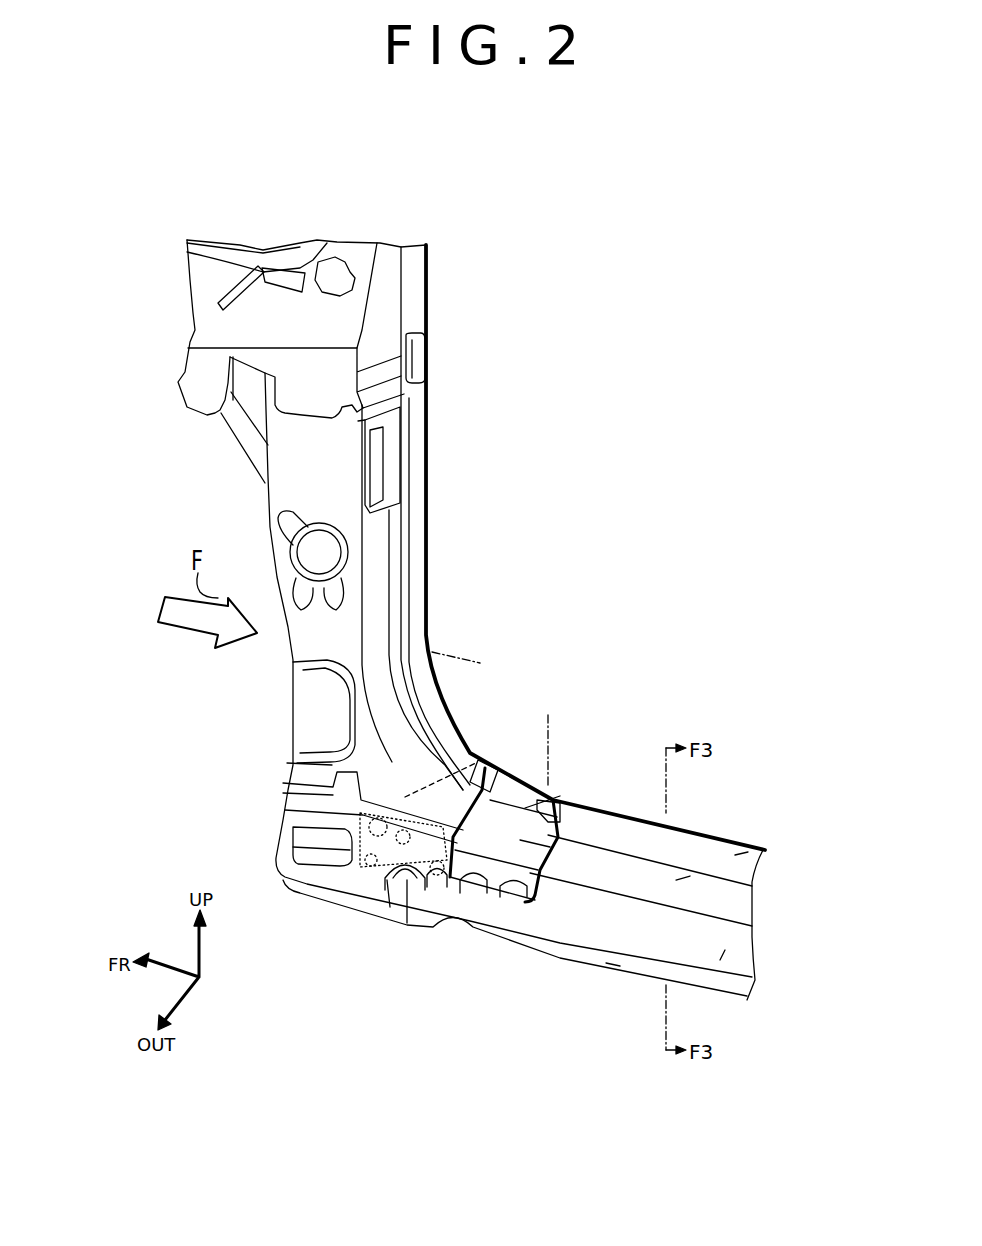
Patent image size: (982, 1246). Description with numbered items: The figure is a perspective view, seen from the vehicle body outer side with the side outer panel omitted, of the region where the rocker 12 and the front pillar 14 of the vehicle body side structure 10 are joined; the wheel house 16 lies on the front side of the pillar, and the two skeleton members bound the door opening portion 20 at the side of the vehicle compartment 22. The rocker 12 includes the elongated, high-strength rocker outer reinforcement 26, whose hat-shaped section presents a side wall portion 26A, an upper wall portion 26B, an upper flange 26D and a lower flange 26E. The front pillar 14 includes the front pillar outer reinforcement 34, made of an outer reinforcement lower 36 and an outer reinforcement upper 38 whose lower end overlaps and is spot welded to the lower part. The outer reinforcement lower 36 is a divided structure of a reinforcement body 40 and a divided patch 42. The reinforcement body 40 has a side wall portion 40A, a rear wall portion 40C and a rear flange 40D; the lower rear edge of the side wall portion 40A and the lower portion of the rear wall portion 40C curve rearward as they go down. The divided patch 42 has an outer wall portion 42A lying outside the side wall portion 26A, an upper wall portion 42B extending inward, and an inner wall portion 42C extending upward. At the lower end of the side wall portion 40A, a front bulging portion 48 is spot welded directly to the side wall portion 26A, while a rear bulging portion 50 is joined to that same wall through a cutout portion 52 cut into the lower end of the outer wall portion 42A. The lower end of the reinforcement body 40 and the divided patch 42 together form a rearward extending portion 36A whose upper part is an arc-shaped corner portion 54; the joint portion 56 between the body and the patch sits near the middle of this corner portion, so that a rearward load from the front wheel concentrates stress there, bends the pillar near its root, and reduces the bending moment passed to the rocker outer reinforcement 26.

The vehicle body side structure 10 is at (664, 505).
The rocker 12 is at (524, 988).
The front pillar 14 is at (517, 490).
The wheel house 16 is at (257, 457).
The door opening portion 20 is at (437, 262).
The vehicle compartment 22 is at (728, 362).
The rocker outer reinforcement 26 is at (569, 988).
The side wall portion 26A is at (723, 962).
The upper wall portion 26B is at (682, 880).
The upper flange 26D is at (742, 851).
The lower flange 26E is at (613, 967).
The front pillar outer reinforcement 34 is at (512, 290).
The outer reinforcement lower 36 is at (438, 454).
The rearward extending portion 36A is at (517, 778).
The outer reinforcement upper 38 is at (444, 311).
The reinforcement body 40 is at (270, 698).
The side wall portion 40A is at (320, 714).
The rear wall portion 40C is at (386, 550).
The rear flange 40D is at (420, 603).
The divided patch 42 is at (557, 895).
The outer wall portion 42A is at (477, 880).
The upper wall portion 42B is at (550, 847).
The inner wall portion 42C is at (567, 797).
The front bulging portion 48 is at (315, 838).
The rear bulging portion 50 is at (407, 930).
The cutout portion 52 is at (480, 765).
The corner portion 54 is at (540, 728).
The joint portion 56 is at (460, 790).